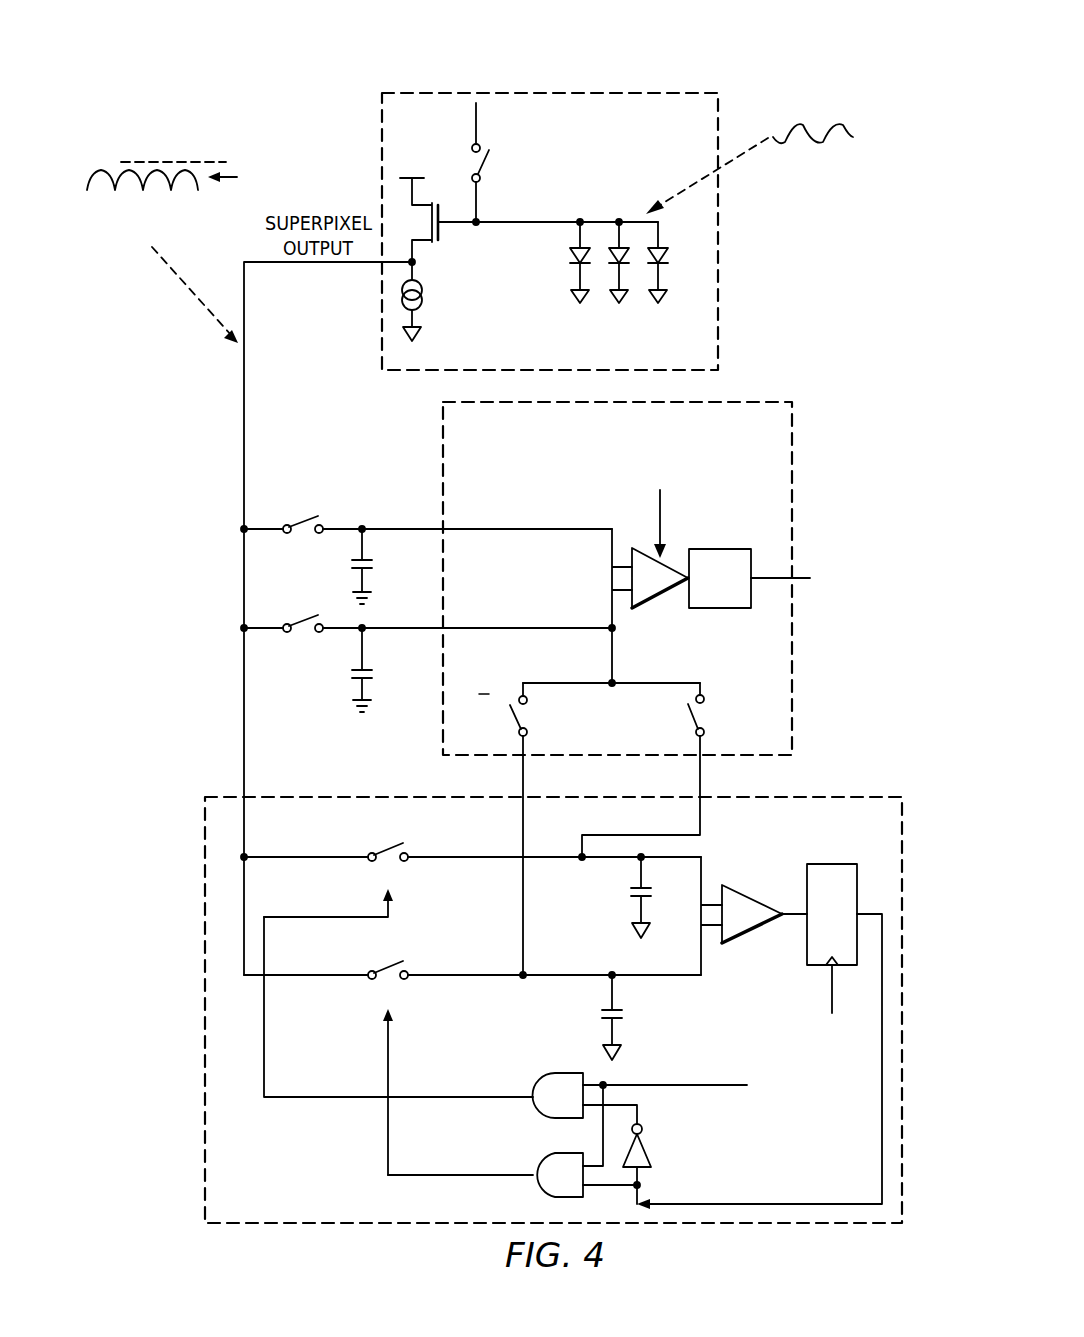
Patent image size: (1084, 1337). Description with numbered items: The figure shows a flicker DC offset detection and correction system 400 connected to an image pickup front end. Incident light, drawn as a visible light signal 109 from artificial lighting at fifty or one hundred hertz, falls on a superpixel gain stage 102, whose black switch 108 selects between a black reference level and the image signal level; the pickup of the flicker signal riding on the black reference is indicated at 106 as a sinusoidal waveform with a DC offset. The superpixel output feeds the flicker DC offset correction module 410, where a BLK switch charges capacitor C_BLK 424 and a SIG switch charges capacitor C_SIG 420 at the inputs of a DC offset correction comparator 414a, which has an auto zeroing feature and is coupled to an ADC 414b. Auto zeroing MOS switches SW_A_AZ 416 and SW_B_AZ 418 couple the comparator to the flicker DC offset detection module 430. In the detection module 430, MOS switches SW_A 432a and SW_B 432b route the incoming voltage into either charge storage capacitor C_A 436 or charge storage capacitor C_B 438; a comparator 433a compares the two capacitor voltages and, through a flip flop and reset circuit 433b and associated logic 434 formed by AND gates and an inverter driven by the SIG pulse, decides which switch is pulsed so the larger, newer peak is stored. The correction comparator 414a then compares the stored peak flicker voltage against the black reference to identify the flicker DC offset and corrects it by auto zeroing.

The flicker DC offset detection and correction system 400 is at (312, 60).
The superpixel gain stage 102 is at (592, 84).
The digitization stage 106 is at (105, 170).
The black switch 108 is at (490, 154).
The visible light signal 109 is at (843, 128).
The flicker DC offset correction module 410 is at (800, 526).
The DC offset correction comparator 414a is at (661, 600).
The ADC 414b is at (718, 609).
The auto zeroing MOS switch SW_A_AZ 416 is at (690, 723).
The auto zeroing MOS switch SW_B_AZ 418 is at (512, 723).
The capacitor C_SIG 420 is at (350, 670).
The capacitor C_BLK 424 is at (350, 566).
The flicker DC offset detection module 430 is at (196, 1075).
The MOS switch SW_A 432a is at (386, 846).
The MOS switch SW_B 432b is at (386, 965).
The comparator 433a is at (770, 882).
The flip flop and reset circuit 433b is at (843, 864).
The logic gates (AND gates and inverter) 434 is at (680, 1084).
The charge storage capacitor C_A 436 is at (630, 890).
The charge storage capacitor C_B 438 is at (602, 1015).